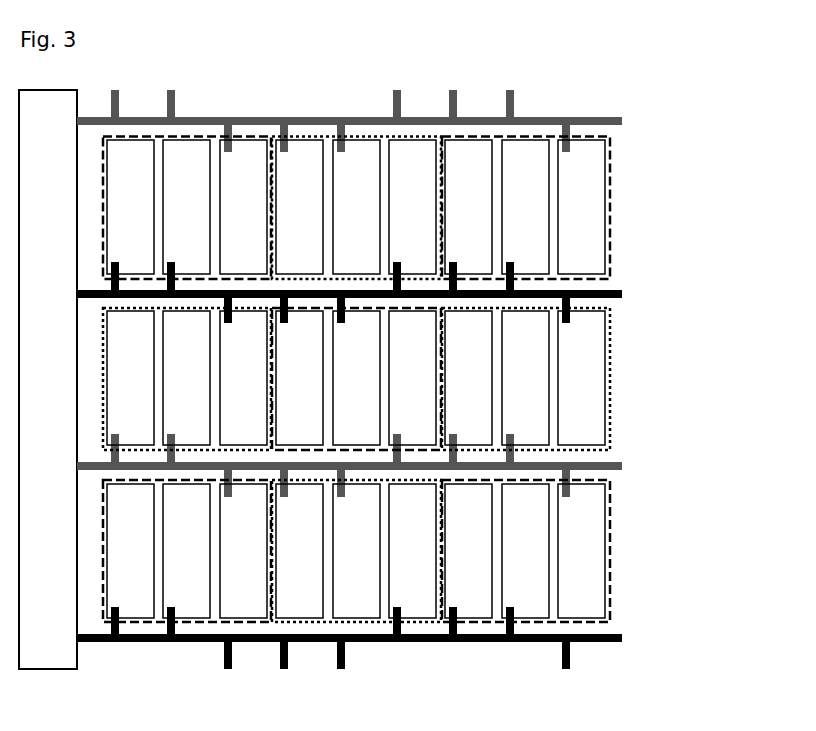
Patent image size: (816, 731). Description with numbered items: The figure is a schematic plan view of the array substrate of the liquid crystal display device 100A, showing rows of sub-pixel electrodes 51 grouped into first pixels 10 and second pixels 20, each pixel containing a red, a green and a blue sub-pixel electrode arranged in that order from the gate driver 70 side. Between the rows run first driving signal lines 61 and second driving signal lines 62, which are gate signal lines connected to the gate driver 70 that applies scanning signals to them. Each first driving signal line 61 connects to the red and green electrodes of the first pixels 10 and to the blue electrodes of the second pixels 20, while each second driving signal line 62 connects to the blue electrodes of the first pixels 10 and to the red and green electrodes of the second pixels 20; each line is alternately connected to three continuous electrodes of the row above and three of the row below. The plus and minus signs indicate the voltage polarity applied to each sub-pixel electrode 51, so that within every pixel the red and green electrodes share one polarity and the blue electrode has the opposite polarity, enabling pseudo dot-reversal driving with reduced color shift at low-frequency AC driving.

The liquid crystal display device 100A is at (773, 98).
The gate driver 70 is at (48, 379).
The second driving signal line 62 is at (605, 121).
The first driving signal line 61 is at (605, 293).
The first pixel 10 is at (360, 450).
The second pixel 20 is at (610, 372).
The sub-pixel electrode 51 is at (356, 379).